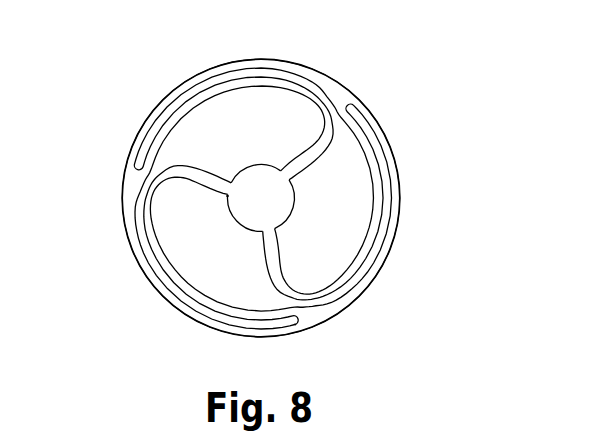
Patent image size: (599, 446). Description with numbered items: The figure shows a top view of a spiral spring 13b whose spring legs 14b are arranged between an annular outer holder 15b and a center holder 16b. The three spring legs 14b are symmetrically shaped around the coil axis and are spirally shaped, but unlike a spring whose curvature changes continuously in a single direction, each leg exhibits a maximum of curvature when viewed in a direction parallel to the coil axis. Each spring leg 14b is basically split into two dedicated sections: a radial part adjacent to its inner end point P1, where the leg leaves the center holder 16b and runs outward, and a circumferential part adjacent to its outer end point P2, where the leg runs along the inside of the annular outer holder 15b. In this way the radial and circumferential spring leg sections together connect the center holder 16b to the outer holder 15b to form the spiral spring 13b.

The spiral spring 13b is at (118, 76).
The spring legs 14b is at (140, 213).
The annular outer holder 15b is at (346, 97).
The center holder 16b is at (276, 215).
The inner end point P1 is at (226, 187).
The outer end point P2 is at (303, 322).